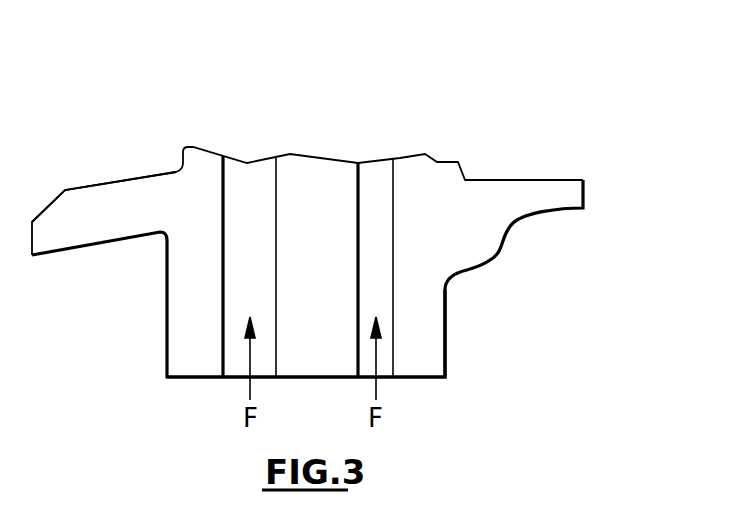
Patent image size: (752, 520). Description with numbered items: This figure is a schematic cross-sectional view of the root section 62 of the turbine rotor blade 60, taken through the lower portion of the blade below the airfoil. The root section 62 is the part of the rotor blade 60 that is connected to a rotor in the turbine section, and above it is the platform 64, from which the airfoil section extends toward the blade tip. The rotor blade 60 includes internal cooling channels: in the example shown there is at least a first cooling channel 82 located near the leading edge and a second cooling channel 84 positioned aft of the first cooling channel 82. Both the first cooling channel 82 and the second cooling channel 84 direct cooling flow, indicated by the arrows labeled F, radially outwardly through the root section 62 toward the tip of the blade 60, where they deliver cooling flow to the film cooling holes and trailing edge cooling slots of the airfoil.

The turbine rotor blade 60 is at (532, 108).
The root section 62 is at (428, 348).
The platform 64 is at (80, 208).
The first cooling channel 82 is at (243, 302).
The second cooling channel 84 is at (375, 187).